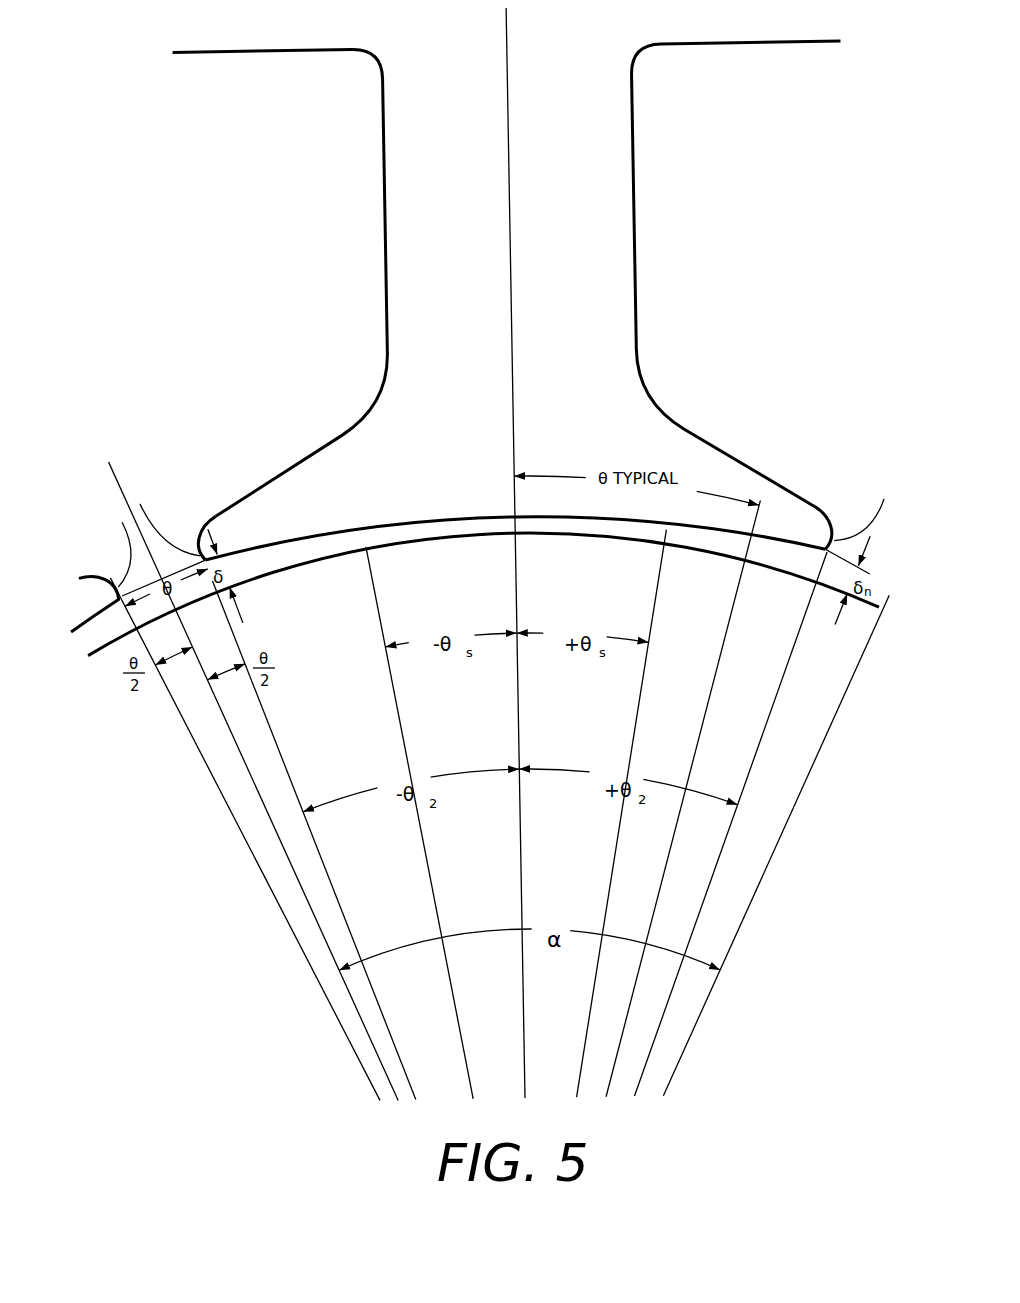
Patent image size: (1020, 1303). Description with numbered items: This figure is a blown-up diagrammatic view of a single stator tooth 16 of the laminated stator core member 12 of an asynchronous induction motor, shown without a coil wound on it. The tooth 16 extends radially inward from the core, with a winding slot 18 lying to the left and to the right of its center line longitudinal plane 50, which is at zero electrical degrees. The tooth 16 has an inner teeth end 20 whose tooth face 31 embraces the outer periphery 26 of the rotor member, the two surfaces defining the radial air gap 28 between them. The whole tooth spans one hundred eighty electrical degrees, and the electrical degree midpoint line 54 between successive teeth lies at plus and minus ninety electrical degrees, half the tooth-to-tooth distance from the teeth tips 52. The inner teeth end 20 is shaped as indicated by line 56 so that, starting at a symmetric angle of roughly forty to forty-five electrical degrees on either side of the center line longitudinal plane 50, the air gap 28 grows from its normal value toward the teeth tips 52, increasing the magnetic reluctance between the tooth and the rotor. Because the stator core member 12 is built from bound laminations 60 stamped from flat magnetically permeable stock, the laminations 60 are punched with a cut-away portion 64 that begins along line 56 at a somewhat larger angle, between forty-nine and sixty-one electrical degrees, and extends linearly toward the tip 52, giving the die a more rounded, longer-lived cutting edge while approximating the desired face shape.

The stator core member 12 is at (698, 37).
The tooth 16 is at (587, 268).
The winding slot 18 is at (257, 274).
The inner teeth end 20 is at (562, 502).
The outer periphery 26 is at (624, 545).
The air gap 28 is at (481, 532).
The tooth face 31 is at (386, 538).
The center line longitudinal plane 50 is at (507, 152).
The teeth tip 52 is at (217, 522).
The electrical degree midpoint line 54 is at (115, 472).
The line 56 is at (155, 512).
The lamination 60 is at (608, 118).
The cut-away portion 64 is at (253, 557).